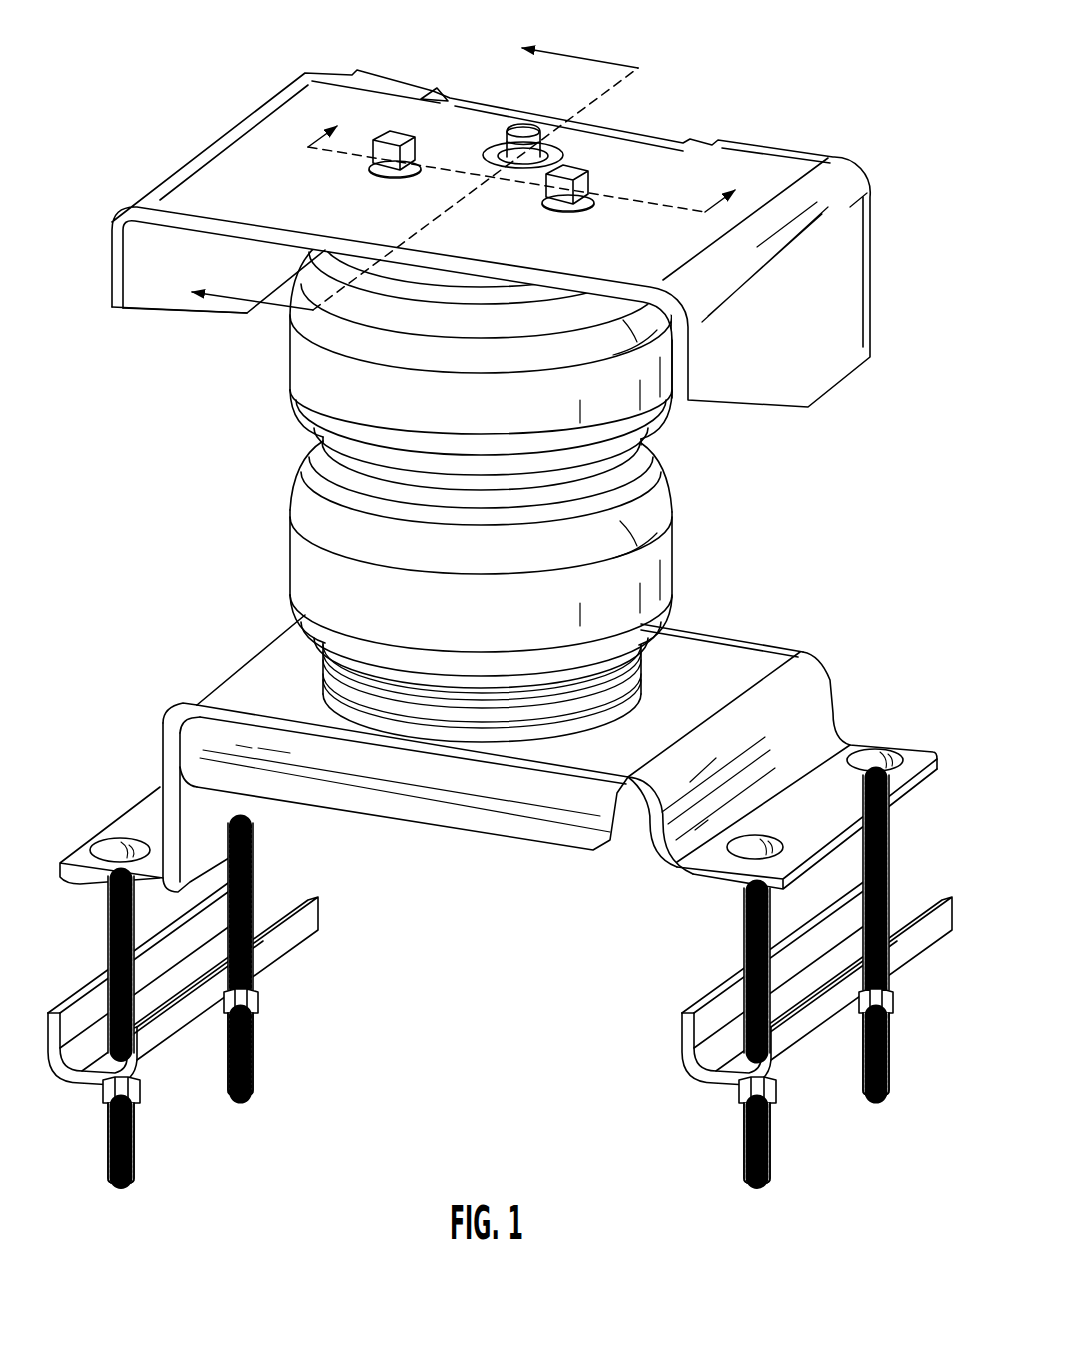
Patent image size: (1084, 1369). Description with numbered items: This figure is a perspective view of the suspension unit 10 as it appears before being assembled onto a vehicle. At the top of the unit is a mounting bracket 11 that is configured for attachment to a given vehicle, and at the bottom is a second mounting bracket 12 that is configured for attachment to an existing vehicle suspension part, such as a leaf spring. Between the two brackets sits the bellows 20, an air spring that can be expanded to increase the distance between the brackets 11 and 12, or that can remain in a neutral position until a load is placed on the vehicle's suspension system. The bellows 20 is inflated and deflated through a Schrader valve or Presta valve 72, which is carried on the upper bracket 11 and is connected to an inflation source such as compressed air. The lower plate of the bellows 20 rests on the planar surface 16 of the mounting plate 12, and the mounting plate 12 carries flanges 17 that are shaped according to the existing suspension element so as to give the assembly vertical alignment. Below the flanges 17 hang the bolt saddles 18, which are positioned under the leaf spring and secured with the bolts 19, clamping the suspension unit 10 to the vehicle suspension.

The suspension unit 10 is at (504, 606).
The mounting bracket 11 is at (787, 397).
The mounting bracket 12 is at (498, 736).
The planar surface 16 is at (641, 750).
The flange 17 is at (837, 767).
The bolt saddle 18 is at (682, 1033).
The bolt 19 is at (890, 847).
The bellows 20 is at (700, 514).
The Schrader valve or Presta valve 72 is at (505, 152).